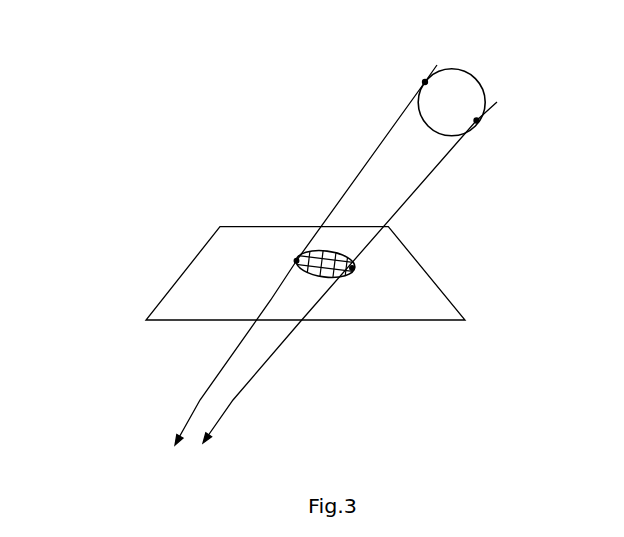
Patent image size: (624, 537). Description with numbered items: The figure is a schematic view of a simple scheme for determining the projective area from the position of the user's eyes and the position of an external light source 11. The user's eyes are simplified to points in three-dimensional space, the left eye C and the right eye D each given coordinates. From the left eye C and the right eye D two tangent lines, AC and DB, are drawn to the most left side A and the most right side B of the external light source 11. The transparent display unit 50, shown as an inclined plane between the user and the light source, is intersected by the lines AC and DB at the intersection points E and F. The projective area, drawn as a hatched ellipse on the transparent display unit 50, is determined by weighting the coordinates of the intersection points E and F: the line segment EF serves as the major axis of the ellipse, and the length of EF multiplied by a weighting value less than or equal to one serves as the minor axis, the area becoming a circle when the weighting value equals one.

The external light source 11 is at (501, 76).
The transparent display unit 50 is at (349, 314).
The most left side of the external light source A is at (353, 78).
The most right side of the external light source B is at (547, 137).
The user's left eye C is at (110, 427).
The user's right eye D is at (284, 445).
The intersection point of line AC with the transparent display unit E is at (223, 255).
The intersection point of line DB with the transparent display unit F is at (404, 285).